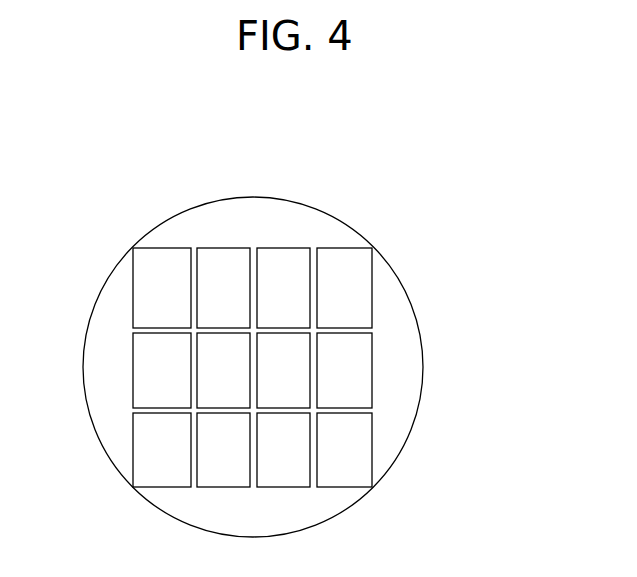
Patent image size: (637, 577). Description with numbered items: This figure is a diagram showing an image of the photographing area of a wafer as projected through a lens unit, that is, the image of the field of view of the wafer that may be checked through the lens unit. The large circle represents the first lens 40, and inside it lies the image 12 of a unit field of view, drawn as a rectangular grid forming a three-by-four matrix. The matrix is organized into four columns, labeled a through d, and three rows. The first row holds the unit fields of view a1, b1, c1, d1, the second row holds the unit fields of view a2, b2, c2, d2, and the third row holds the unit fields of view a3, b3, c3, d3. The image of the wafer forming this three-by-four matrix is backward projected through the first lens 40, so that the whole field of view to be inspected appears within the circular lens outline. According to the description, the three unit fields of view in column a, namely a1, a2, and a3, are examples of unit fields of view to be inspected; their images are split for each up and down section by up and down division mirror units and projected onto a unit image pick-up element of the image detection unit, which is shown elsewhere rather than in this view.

The first lens 40 is at (251, 197).
The image of a unit field of view 12 is at (317, 362).
The unit field of view a1 is at (162, 288).
The unit field of view b1 is at (223, 288).
The unit field of view c1 is at (283, 288).
The unit field of view d1 is at (344, 288).
The unit field of view a2 is at (162, 370).
The unit field of view b2 is at (223, 370).
The unit field of view c2 is at (283, 370).
The unit field of view d2 is at (344, 370).
The unit field of view a3 is at (162, 450).
The unit field of view b3 is at (223, 450).
The unit field of view c3 is at (283, 450).
The unit field of view d3 is at (344, 450).